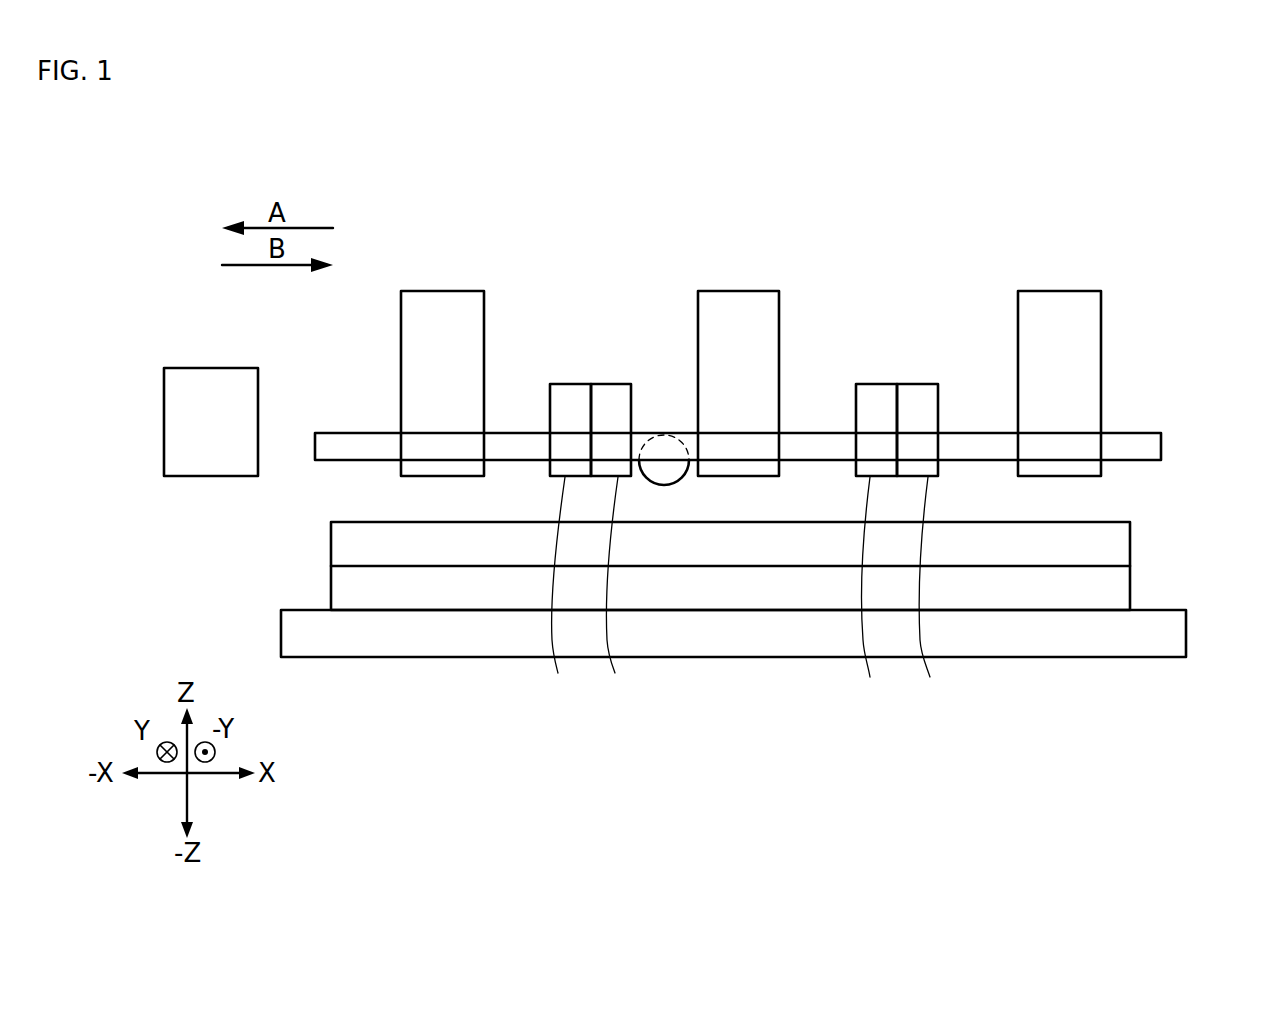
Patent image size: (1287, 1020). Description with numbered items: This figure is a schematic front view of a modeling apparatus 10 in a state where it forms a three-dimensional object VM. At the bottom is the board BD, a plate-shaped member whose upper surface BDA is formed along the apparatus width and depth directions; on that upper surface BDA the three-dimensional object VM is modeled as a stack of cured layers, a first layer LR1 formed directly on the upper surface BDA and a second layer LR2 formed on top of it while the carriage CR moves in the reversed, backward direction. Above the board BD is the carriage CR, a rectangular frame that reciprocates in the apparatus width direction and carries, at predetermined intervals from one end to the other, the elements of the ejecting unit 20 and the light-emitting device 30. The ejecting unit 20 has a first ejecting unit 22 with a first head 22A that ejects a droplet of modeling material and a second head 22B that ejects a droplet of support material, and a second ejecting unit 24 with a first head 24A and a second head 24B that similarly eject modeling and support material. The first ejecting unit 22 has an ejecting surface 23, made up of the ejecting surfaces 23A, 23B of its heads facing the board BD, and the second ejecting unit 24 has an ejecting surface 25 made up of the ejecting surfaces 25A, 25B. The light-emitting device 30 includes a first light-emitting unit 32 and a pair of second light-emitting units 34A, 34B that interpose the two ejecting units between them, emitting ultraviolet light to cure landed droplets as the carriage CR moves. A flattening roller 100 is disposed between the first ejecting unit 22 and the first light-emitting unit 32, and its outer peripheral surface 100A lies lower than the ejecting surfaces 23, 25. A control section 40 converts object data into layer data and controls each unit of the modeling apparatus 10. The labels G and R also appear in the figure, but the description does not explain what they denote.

The modeling apparatus 10 is at (1195, 250).
The ejecting unit 20 is at (534, 478).
The first ejecting unit 22 is at (638, 323).
The first head 22A is at (560, 384).
The second head 22B is at (617, 384).
The ejecting surface 23 is at (643, 707).
The ejecting surface 23A is at (562, 591).
The ejecting surface 23B is at (621, 591).
The second ejecting unit 24 is at (946, 323).
The first head 24A is at (867, 384).
The second head 24B is at (924, 384).
The ejecting surface 25 is at (955, 707).
The ejecting surface 25A is at (871, 591).
The ejecting surface 25B is at (931, 591).
The light-emitting device 30 is at (996, 254).
The first light-emitting unit 32 is at (746, 291).
The second light-emitting unit 34A is at (422, 291).
The second light-emitting unit 34B is at (1069, 291).
The control section 40 is at (220, 368).
The flattening roller 100 is at (660, 436).
The outer peripheral surface 100A is at (672, 484).
The carriage CR is at (1135, 433).
The gap G is at (364, 532).
The region R is at (636, 484).
The three-dimensional object VM is at (147, 528).
The layer LR1 is at (343, 580).
The layer LR2 is at (343, 544).
The board BD is at (1037, 640).
The upper surface BDA is at (1151, 610).